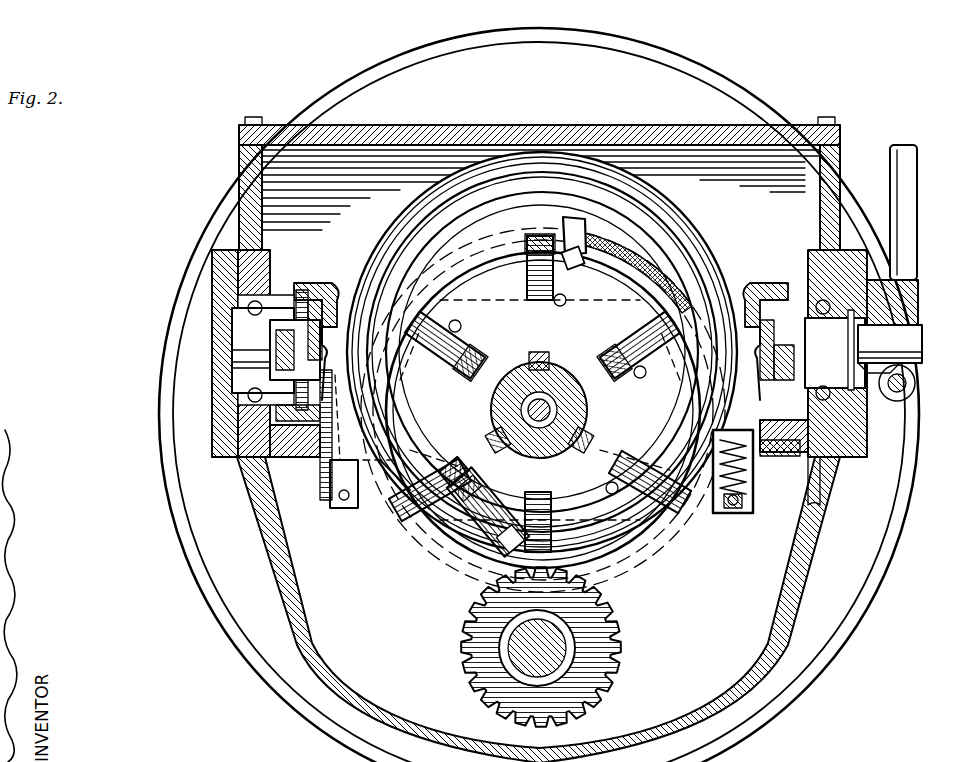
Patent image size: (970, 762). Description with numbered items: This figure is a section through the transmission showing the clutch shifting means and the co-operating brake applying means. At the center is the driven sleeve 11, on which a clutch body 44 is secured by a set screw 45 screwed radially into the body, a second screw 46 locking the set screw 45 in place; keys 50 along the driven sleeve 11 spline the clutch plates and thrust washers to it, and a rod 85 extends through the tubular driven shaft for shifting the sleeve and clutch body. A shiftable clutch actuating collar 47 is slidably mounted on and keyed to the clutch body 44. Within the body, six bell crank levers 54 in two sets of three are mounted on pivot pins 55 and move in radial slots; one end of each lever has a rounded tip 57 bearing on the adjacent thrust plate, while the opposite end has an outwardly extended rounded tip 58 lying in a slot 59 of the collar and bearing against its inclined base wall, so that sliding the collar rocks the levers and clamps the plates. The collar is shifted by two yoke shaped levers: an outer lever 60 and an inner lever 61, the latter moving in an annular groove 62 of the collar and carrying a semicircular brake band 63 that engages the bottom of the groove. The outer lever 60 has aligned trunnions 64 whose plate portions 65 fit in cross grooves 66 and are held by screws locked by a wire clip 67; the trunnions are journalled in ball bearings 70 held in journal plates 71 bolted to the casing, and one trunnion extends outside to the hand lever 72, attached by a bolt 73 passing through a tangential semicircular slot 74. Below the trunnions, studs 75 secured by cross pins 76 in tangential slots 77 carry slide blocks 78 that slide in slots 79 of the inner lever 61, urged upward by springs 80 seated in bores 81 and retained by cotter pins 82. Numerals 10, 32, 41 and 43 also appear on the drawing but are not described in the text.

The housing 10 is at (268, 535).
The driven sleeve 11 is at (498, 402).
The casing 32 is at (186, 518).
The gear shaft 41 is at (503, 660).
The gear 43 is at (547, 647).
The clutch body 44 is at (440, 548).
The set screw 45 is at (453, 491).
The second screw 46 is at (482, 560).
The shiftable clutch actuating sleeve or collar 47 is at (636, 566).
The keys 50 is at (530, 360).
The levers 54 is at (540, 393).
The pivot pins 55 is at (618, 490).
The rounded tip 57 is at (569, 490).
The outwardly extended rounded tip 58 is at (395, 505).
The slots 59 is at (368, 505).
The outer yoke shaped lever 60 is at (362, 240).
The inner yoke shaped lever 61 is at (690, 272).
The annular groove 62 is at (610, 262).
The semicircular brake band 63 is at (648, 270).
The studs or trunnions 64 is at (250, 352).
The intermediate plate portions 65 is at (260, 400).
The cross grooves 66 is at (298, 300).
The wire clip 67 is at (303, 280).
The ball bearings 70 is at (240, 322).
The bearing supports or journal plates 71 is at (846, 462).
The clutch operating hand lever 72 is at (915, 262).
The bolt 73 is at (916, 384).
The tangential semicircular slot 74 is at (905, 366).
The studs 75 is at (294, 458).
The cross pins 76 is at (790, 490).
The tangential slots 77 is at (768, 458).
The journal or slide blocks 78 is at (692, 403).
The slots 79 is at (660, 390).
The springs 80 is at (716, 514).
The bores 81 is at (748, 500).
The cotter pins 82 is at (330, 500).
The rod 85 is at (560, 402).